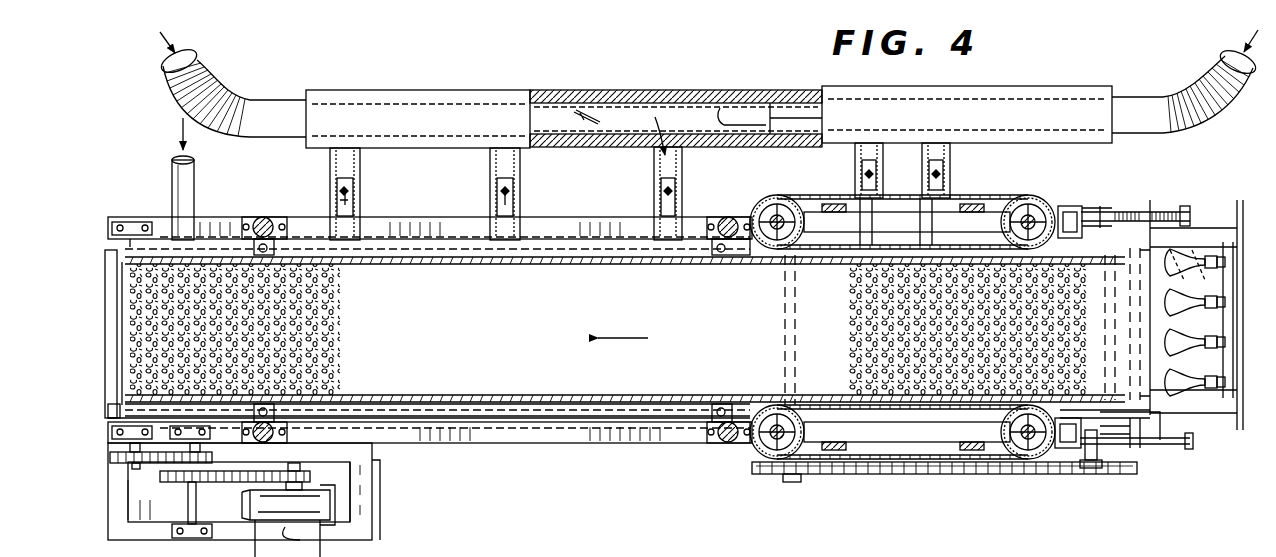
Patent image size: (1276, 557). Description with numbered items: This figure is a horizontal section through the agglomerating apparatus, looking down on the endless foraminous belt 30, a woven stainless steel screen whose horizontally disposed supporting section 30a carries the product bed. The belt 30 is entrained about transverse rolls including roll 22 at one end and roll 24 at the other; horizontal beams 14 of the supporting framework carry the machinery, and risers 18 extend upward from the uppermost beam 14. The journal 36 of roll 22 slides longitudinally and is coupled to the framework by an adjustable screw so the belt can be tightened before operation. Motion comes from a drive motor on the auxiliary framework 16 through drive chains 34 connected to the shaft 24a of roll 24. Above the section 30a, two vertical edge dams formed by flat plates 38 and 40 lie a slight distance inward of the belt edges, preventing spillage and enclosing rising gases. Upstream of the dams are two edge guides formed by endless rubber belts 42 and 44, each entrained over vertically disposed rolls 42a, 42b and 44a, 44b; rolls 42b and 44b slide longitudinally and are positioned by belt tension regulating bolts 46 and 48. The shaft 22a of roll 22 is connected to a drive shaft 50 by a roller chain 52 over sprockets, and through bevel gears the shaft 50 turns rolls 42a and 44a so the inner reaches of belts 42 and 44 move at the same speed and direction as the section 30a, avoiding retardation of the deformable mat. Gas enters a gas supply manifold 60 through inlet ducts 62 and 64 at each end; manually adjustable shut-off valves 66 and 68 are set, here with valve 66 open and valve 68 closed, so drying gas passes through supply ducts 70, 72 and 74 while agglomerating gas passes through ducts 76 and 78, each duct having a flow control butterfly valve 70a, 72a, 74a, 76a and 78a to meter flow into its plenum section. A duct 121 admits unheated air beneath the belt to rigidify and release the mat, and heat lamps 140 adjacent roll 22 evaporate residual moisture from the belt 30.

The horizontally disposed beams 14 is at (436, 218).
The auxiliary framework 16 is at (118, 476).
The risers 18 is at (265, 218).
The roll 22 is at (1135, 432).
The shaft of roll 22 22a is at (1120, 448).
The roll 24 is at (104, 414).
The shaft of roll 24 24a is at (135, 488).
The endless foraminous supporting member or belt 30 is at (108, 308).
The horizontally disposed supporting section 30a is at (528, 339).
The drive chains 34 is at (172, 482).
The journal of roll 22 36 is at (1114, 212).
The edge dam plate 38 is at (436, 394).
The edge dam plate 40 is at (455, 265).
The edge guide belt 42 is at (845, 250).
The roll 42a is at (775, 196).
The roll 42b is at (1048, 206).
The edge guide belt 44 is at (818, 405).
The roll 44a is at (780, 404).
The roll 44b is at (1026, 460).
The belt tension regulating bolt 46 is at (1076, 220).
The belt tension regulating bolt 48 is at (1070, 448).
The drive shaft 50 is at (786, 484).
The roller chain 52 is at (898, 475).
The gas supply manifold 60 is at (462, 88).
The inlet duct 62 is at (190, 100).
The inlet duct 64 is at (1185, 132).
The shut-off valve 66 is at (585, 112).
The shut-off valve 68 is at (720, 110).
The gas supply duct 70 is at (358, 160).
The butterfly valve 70a is at (340, 198).
The gas supply duct 72 is at (503, 160).
The butterfly valve 72a is at (514, 200).
The gas supply duct 74 is at (652, 162).
The butterfly valve 74a is at (660, 193).
The gas supply duct 76 is at (856, 156).
The butterfly valve 76a is at (866, 176).
The gas supply duct 78 is at (950, 152).
The butterfly valve 78a is at (948, 176).
The duct 121 is at (172, 186).
The heat lamps 140 is at (1212, 262).